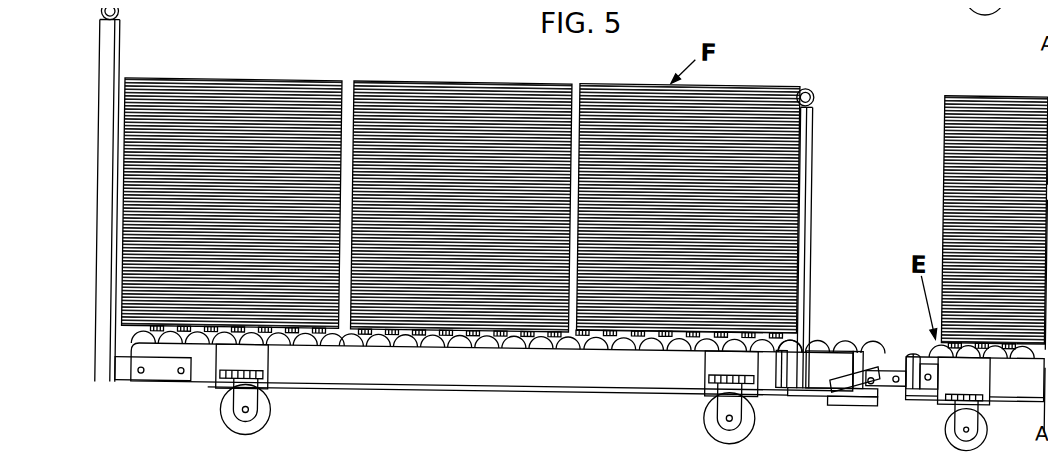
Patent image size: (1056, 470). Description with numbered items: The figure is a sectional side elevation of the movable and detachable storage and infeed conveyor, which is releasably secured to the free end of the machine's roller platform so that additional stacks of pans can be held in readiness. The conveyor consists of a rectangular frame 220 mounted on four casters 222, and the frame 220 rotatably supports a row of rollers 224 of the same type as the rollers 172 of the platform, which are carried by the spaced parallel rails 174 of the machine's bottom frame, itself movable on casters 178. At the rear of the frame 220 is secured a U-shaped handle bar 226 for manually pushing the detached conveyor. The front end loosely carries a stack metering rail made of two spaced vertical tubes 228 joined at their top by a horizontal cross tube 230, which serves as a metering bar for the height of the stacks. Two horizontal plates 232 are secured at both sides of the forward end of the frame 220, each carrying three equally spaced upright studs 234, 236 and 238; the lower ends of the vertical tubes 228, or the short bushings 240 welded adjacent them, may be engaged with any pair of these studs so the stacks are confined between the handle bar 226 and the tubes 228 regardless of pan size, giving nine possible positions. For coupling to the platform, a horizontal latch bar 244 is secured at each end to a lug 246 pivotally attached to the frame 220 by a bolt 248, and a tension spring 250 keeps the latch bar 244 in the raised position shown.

The rollers 172 is at (1017, 339).
The rails 174 is at (1000, 381).
The casters 178 is at (979, 426).
The frame 220 is at (494, 376).
The casters 222 is at (264, 409).
The rollers 224 is at (347, 331).
The handle bar 226 is at (106, 10).
The vertical tubes 228 is at (802, 164).
The horizontal cross tube 230 is at (802, 82).
The horizontal plates 232 is at (808, 378).
The upright stud 234 is at (792, 334).
The upright stud 236 is at (852, 341).
The upright stud 238 is at (905, 340).
The bushing 240 is at (768, 375).
The latch bar 244 is at (892, 375).
The lug 246 is at (883, 370).
The bolt 248 is at (837, 383).
The tension spring 250 is at (834, 370).